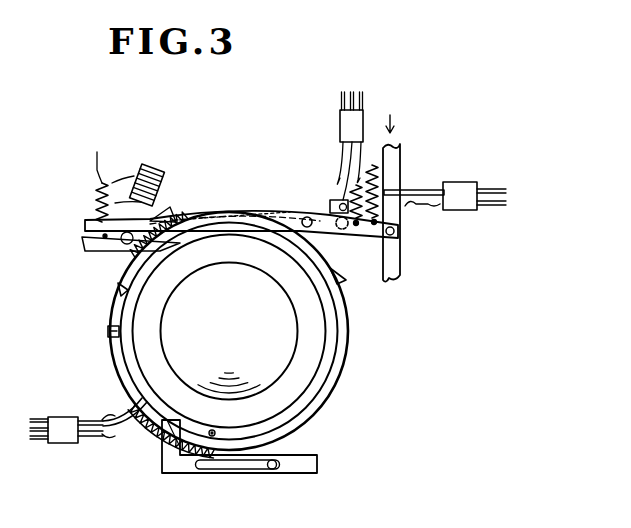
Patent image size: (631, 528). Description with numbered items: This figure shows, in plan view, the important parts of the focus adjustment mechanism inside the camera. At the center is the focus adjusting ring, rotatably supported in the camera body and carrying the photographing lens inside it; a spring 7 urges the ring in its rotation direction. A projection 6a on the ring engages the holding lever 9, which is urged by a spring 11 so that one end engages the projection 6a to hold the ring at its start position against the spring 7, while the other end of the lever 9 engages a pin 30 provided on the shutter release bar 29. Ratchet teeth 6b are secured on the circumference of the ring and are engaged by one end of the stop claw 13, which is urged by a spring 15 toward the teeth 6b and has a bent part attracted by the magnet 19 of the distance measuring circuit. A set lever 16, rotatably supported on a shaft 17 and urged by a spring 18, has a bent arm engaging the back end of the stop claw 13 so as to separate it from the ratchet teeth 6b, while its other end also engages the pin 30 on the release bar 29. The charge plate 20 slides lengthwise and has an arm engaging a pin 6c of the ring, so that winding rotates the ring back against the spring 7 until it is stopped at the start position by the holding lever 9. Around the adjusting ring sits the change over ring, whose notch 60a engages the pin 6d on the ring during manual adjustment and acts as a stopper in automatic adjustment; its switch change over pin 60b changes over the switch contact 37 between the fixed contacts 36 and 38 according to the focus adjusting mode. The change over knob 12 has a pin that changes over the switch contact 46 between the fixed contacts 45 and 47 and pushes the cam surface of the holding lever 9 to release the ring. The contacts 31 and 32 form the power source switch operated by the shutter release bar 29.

The projection 6a is at (340, 281).
The ratchet teeth 6b is at (131, 256).
The pin 6c is at (212, 437).
The pin 6d is at (108, 331).
The spring 7 is at (156, 428).
The holding lever 9 is at (358, 226).
The spring 11 is at (376, 164).
The change over knob 12 is at (333, 203).
The stop claw 13 is at (88, 241).
The spring 15 is at (98, 176).
The set lever 16 is at (275, 216).
The shaft 17 is at (305, 217).
The spring 18 is at (343, 230).
The magnet 19 is at (141, 167).
The charge plate 20 is at (300, 468).
The shutter release bar 29 is at (401, 150).
The pin 30 is at (394, 233).
The contact of power source switch 31 is at (415, 190).
The contact of power source switch 32 is at (462, 211).
The fixed contact 36 is at (87, 417).
The switch contact 37 is at (116, 414).
The contact of auto-manual change over switch 38 is at (83, 443).
The fixed contact 45 is at (343, 92).
The switch contact 46 is at (352, 92).
The fixed contact 47 is at (361, 92).
The notch 60a is at (118, 290).
The switch change over pin 60b is at (134, 417).